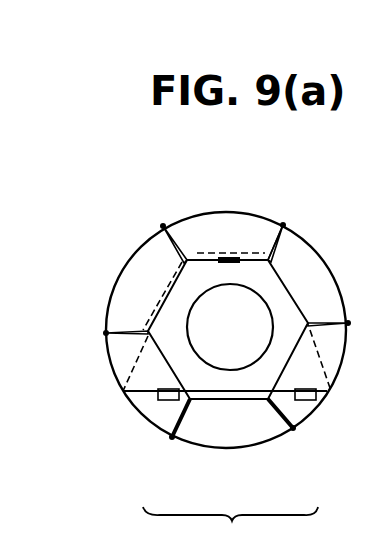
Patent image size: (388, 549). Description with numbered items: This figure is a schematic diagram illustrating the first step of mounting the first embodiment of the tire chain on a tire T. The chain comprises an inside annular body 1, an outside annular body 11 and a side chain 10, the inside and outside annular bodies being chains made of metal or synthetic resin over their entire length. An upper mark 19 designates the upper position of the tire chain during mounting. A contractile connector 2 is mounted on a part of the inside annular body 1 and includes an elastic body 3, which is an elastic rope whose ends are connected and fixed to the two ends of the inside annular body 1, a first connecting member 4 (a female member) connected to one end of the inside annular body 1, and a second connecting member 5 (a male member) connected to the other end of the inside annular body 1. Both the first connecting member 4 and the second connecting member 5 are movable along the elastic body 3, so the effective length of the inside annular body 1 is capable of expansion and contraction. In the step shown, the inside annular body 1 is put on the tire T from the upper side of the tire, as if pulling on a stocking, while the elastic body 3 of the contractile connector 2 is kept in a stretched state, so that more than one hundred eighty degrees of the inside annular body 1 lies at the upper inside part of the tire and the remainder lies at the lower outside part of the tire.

The tire T is at (124, 263).
The side chain 10 is at (283, 226).
The inside annular body 1 is at (299, 300).
The outside annular body 11 is at (285, 281).
The upper mark 19 is at (229, 257).
The contractile connector 2 is at (230, 528).
The elastic body 3 is at (227, 400).
The first connecting member 4 is at (164, 400).
The second connecting member 5 is at (305, 400).